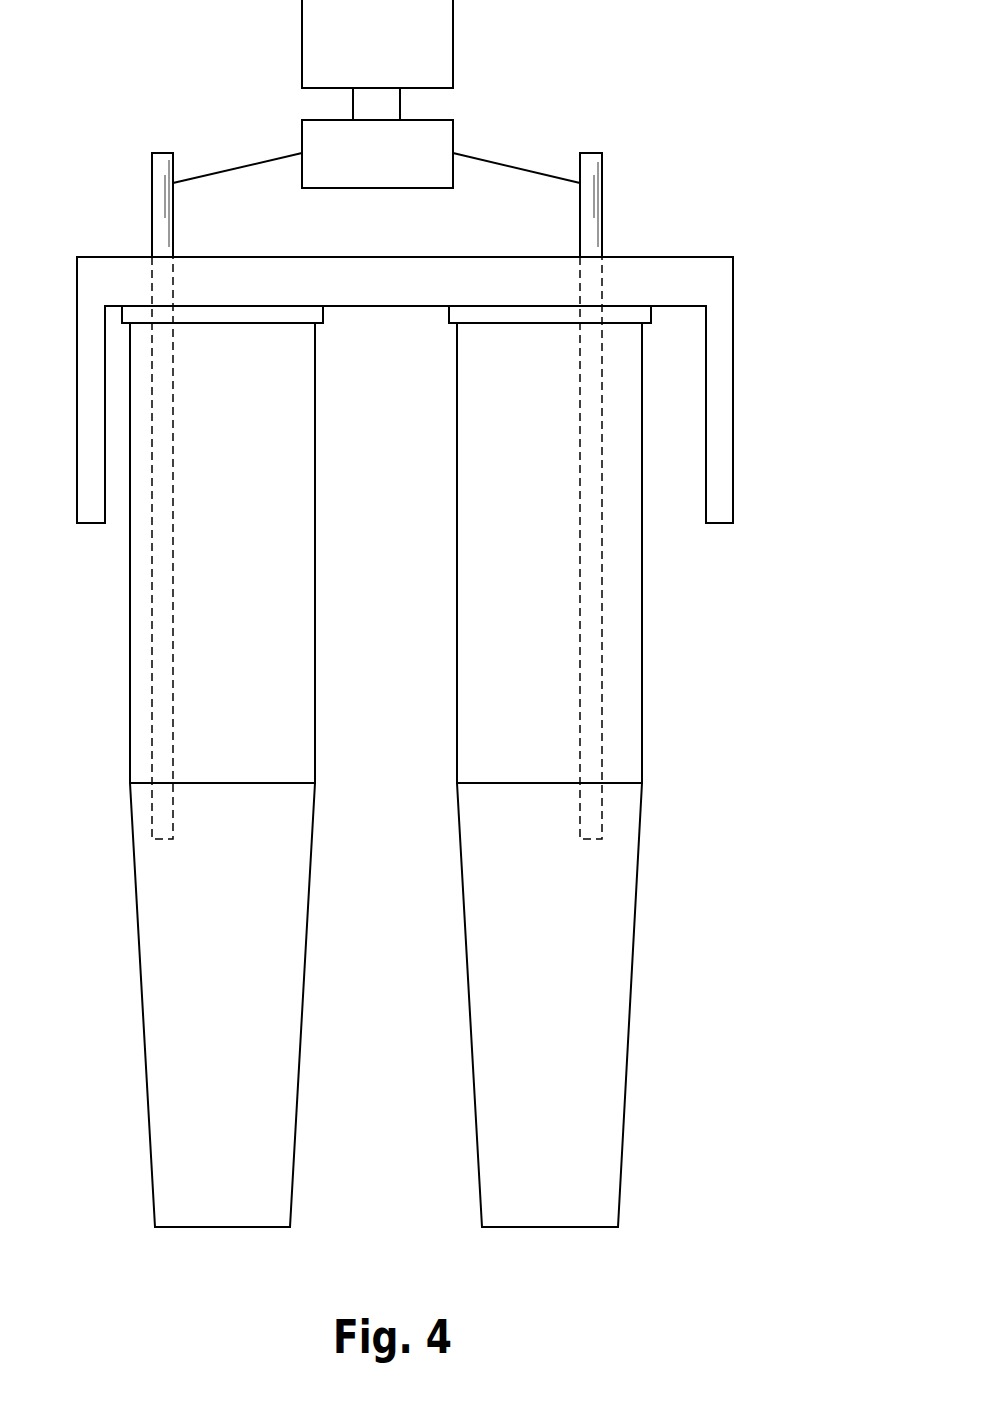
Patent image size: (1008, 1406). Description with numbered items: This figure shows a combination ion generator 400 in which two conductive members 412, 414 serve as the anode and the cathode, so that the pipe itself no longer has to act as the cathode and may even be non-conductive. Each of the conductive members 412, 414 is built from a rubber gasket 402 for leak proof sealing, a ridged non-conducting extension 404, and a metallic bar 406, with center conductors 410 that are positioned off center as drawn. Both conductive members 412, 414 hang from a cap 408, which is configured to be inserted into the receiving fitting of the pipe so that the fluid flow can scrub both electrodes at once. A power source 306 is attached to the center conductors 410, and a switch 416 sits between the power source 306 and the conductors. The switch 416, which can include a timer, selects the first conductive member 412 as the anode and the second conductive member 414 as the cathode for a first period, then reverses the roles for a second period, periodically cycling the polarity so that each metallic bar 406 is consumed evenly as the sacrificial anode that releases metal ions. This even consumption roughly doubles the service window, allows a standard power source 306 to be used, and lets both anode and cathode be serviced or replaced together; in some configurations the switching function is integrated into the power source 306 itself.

The power source 306 is at (302, 42).
The combination ion generator 400 is at (790, 245).
The rubber gasket 402 is at (449, 323).
The ridged non-conducting extensions 404 is at (457, 600).
The metallic bar 406 is at (462, 858).
The cap 408 is at (733, 466).
The center conductors 410 is at (173, 217).
The first conductive member 412 is at (226, 1266).
The second conductive member 414 is at (554, 1266).
The switch 416 is at (383, 188).